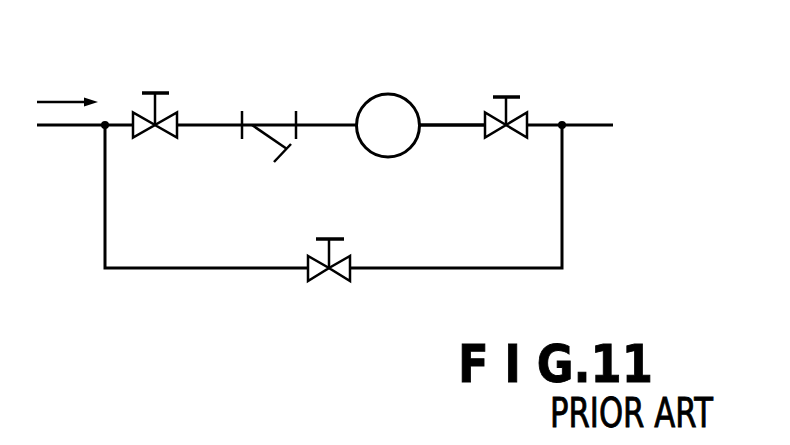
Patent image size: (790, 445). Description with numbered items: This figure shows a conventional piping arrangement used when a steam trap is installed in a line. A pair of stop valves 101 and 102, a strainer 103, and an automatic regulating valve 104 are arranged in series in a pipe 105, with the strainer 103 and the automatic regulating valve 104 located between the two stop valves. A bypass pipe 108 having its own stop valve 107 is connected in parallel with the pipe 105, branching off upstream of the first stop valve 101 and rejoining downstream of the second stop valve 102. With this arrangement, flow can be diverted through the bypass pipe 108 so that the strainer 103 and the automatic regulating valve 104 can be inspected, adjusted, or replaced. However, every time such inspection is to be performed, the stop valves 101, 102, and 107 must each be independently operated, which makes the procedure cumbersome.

The stop valve 101 is at (165, 87).
The stop valve 102 is at (523, 105).
The strainer 103 is at (267, 118).
The automatic regulating valve 104 is at (386, 93).
The pipe 105 is at (453, 124).
The stop valve 107 is at (318, 282).
The bypass pipe 108 is at (485, 267).